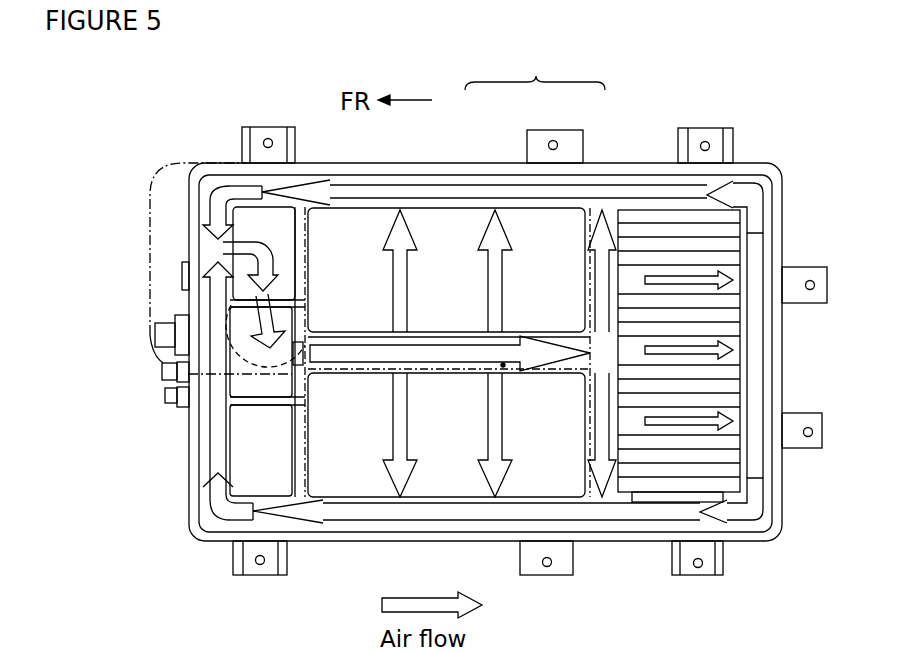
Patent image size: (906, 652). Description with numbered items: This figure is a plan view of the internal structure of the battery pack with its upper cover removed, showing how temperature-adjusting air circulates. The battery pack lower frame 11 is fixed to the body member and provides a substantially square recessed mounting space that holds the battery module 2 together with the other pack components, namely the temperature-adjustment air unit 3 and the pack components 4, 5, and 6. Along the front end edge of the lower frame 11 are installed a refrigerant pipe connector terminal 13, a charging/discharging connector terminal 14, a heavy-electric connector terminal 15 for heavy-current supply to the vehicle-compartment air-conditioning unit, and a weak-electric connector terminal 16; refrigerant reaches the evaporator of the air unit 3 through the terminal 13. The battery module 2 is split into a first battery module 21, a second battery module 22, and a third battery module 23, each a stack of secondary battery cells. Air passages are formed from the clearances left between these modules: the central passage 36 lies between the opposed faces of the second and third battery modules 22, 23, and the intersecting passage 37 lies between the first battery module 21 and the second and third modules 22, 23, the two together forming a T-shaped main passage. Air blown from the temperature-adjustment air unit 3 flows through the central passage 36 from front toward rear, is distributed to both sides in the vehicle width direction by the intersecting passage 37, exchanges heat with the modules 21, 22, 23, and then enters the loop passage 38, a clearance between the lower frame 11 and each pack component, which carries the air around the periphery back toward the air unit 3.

The battery module 2 is at (535, 70).
The temperature-adjustment air unit 3 is at (280, 251).
The pack component 4 is at (272, 384).
The pack component 5 is at (256, 452).
The pack component 6 is at (650, 500).
The battery pack lower frame 11 is at (617, 168).
The refrigerant pipe connector terminal 13 is at (183, 277).
The charging/discharging connector terminal 14 is at (160, 336).
The heavy-electric connector terminal 15 is at (162, 373).
The weak-electric connector terminal 16 is at (165, 400).
The first battery module 21 is at (647, 258).
The second battery module 22 is at (441, 248).
The third battery module 23 is at (447, 400).
The central passage 36 is at (503, 366).
The intersecting passage 37 is at (593, 422).
The loop passage 38 is at (753, 345).